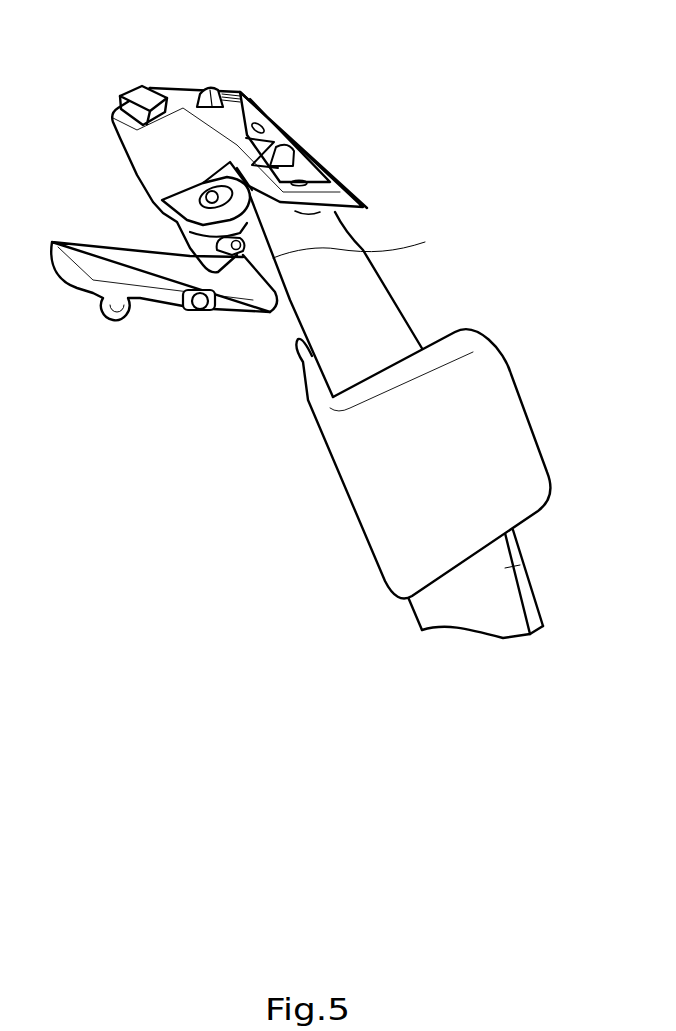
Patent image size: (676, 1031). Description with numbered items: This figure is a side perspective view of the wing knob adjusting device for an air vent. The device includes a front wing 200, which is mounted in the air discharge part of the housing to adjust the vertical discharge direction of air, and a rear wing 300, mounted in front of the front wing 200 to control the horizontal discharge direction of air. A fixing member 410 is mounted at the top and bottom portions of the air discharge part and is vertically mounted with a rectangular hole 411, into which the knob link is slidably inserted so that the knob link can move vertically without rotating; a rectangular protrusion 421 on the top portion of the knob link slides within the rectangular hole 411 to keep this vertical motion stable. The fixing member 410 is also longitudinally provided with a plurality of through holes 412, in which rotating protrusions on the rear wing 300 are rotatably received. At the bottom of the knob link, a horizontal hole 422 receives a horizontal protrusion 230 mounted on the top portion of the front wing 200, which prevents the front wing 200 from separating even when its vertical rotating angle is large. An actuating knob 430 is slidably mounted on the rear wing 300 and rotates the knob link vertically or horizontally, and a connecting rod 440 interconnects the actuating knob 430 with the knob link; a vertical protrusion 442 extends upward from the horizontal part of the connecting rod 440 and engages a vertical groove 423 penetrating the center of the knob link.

The front wing 200 is at (167, 297).
The horizontal protrusion 230 is at (243, 255).
The rear wing 300 is at (520, 563).
The fixing member 410 is at (249, 140).
The rectangular hole 411 is at (120, 103).
The through hole 412 is at (302, 183).
The rectangular protrusion 421 is at (131, 85).
The horizontal hole 422 is at (228, 262).
The vertical groove 423 is at (168, 216).
The actuating knob 430 is at (463, 347).
The connecting rod 440 is at (367, 241).
The vertical protrusion 442 is at (185, 192).